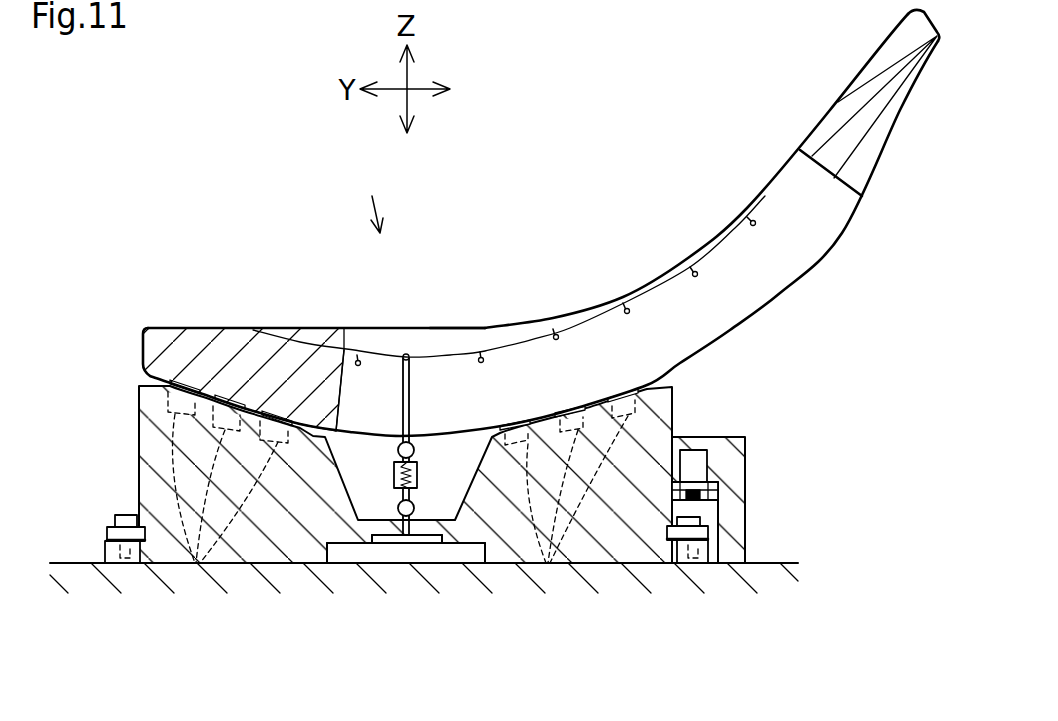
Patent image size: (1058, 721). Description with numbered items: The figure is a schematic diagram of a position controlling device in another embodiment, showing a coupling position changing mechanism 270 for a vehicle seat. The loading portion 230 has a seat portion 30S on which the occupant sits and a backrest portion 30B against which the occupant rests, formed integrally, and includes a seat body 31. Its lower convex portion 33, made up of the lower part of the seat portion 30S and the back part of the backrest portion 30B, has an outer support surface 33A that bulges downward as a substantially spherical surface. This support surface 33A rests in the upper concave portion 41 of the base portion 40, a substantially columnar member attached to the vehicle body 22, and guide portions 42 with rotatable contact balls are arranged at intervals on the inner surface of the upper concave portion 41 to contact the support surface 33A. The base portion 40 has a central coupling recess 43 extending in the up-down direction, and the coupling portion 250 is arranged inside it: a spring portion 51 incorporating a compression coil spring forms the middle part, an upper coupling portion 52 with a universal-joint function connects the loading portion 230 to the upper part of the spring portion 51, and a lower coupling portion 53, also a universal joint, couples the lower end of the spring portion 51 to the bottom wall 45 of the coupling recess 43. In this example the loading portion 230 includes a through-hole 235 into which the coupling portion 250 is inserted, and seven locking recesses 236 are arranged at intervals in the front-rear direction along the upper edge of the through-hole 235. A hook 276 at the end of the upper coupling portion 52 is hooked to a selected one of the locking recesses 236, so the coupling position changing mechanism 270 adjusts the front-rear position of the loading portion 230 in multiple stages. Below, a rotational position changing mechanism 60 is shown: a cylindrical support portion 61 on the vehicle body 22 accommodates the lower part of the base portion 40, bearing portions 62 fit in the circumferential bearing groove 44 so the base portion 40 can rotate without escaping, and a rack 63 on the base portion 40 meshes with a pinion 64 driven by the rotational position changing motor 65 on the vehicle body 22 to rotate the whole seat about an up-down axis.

The vehicle body 22 is at (66, 562).
The seat portion 30S is at (304, 327).
The backrest portion 30B is at (793, 128).
The seat body 31 is at (457, 327).
The lower convex portion 33 is at (533, 454).
The support surface 33A is at (253, 565).
The base portion 40 is at (139, 440).
The upper concave portion 41 is at (263, 406).
The guide portions 42 is at (195, 565).
The coupling recess 43 is at (337, 565).
The bearing groove 44 is at (124, 515).
The bottom wall 45 is at (458, 565).
The spring portion 51 is at (418, 476).
The upper coupling portion 52 is at (412, 446).
The lower coupling portion 53 is at (398, 503).
The rotational position changing mechanism 60 is at (768, 433).
The support portion 61 is at (92, 565).
The bearing portions 62 is at (106, 520).
The rack 63 is at (647, 493).
The pinion 64 is at (718, 493).
The rotational position changing motor 65 is at (693, 450).
The loading portion 230 is at (890, 32).
The through-hole 235 is at (538, 340).
The locking recesses 236 is at (745, 214).
The coupling portion 250 is at (400, 545).
The coupling position changing mechanism 270 is at (373, 199).
The hook 276 is at (408, 355).